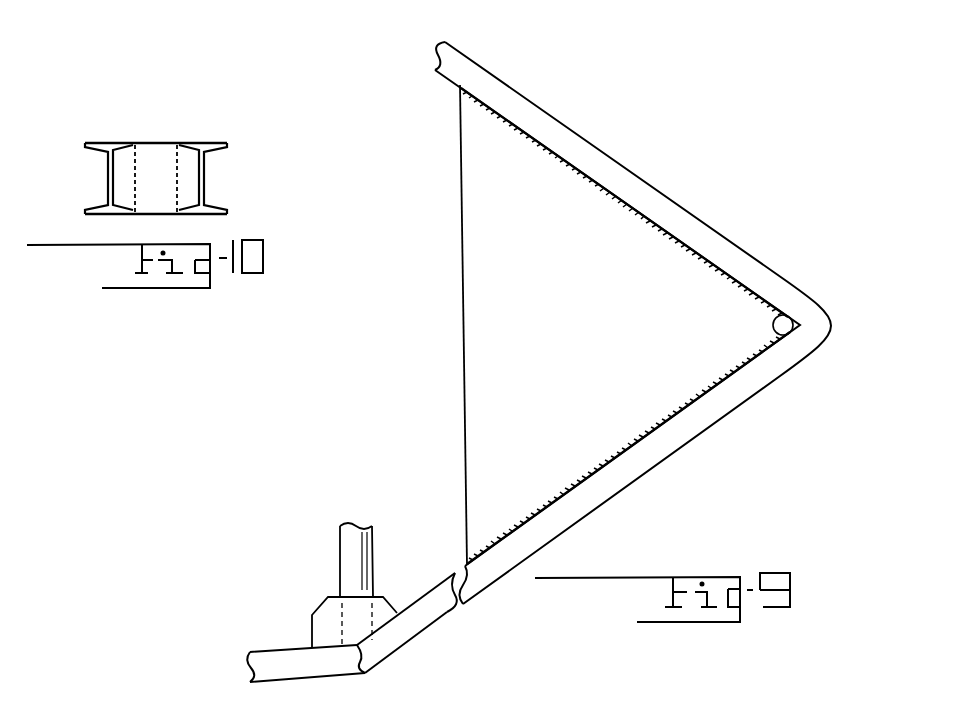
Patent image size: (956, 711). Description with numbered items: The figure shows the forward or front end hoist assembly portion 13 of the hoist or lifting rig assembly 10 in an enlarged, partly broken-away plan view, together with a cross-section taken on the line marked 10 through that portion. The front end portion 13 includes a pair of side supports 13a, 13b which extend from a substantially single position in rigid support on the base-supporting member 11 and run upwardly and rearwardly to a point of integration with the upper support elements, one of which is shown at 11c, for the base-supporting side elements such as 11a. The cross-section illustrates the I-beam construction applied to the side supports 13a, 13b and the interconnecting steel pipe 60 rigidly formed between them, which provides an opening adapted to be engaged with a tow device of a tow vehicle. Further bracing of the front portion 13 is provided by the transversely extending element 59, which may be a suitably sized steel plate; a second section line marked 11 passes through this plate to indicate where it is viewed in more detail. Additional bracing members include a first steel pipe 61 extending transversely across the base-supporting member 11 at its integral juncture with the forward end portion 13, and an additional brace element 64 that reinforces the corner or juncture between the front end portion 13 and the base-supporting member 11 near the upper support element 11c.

In FIG. 9, the forward or front end hoist assembly portion 13 is at (597, 128).
In FIG. 9, the side support 13a is at (647, 473).
In FIG. 10, the side support 13a is at (110, 177).
In FIG. 9, the side support 13b is at (678, 204).
In FIG. 10, the side support 13b is at (205, 172).
In FIG. 9, the transversely extending element 59 is at (625, 325).
In FIG. 9, the interconnecting steel pipe 60 is at (773, 325).
In FIG. 10, the interconnecting steel pipe 60 is at (152, 153).
In FIG. 9, the hoist or lifting rig assembly 10 is at (763, 402).
In FIG. 9, the base-supporting member 11 is at (592, 538).
In FIG. 9, the first steel pipe 61 is at (366, 546).
In FIG. 9, the additional brace element 64 is at (388, 604).
In FIG. 9, the base-supporting side element 11a is at (268, 641).
In FIG. 9, the upper support element 11c is at (298, 672).